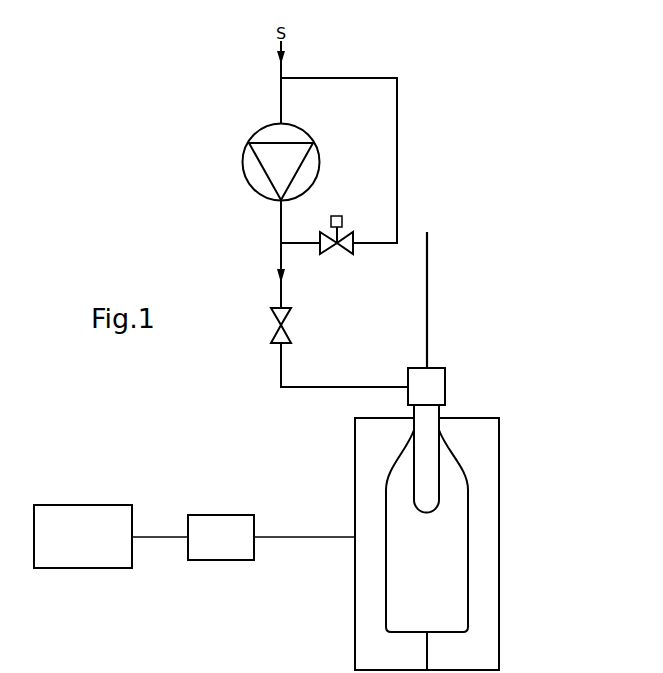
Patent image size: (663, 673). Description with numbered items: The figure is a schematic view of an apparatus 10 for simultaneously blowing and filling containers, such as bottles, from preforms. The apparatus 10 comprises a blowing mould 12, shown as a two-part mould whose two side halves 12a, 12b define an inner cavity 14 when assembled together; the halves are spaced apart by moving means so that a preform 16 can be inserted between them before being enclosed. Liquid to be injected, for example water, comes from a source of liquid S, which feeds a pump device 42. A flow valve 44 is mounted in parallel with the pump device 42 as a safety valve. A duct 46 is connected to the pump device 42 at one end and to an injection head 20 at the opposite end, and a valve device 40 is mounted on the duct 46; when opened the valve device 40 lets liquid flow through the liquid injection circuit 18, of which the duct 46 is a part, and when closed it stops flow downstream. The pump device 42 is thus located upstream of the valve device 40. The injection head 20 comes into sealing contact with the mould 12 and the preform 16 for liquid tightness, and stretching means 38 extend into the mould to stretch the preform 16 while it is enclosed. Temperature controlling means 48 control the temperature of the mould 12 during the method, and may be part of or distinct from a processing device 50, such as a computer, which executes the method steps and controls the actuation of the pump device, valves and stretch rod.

The apparatus 10 is at (476, 137).
The blowing mould 12 is at (436, 545).
The side half 12a is at (366, 603).
The side half 12b is at (487, 600).
The inner cavity 14 is at (399, 558).
The preform 16 is at (430, 497).
The liquid injection circuit 18 is at (296, 406).
The injection head 20 is at (445, 388).
The stretching means 38 is at (456, 281).
The valve device 40 is at (271, 330).
The pump device 42 is at (339, 137).
The flow valve 44 is at (358, 215).
The duct 46 is at (281, 288).
The temperature controlling means 48 is at (271, 537).
The processing device 50 is at (111, 536).